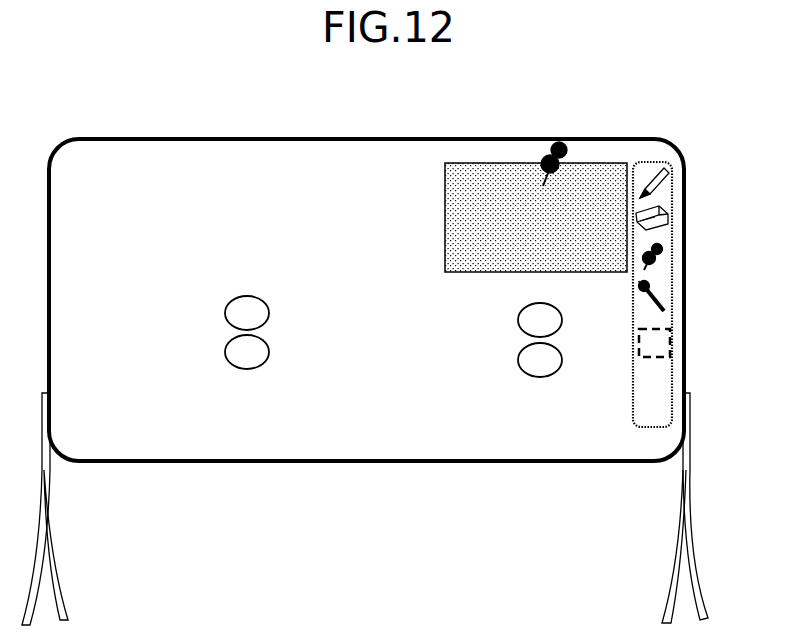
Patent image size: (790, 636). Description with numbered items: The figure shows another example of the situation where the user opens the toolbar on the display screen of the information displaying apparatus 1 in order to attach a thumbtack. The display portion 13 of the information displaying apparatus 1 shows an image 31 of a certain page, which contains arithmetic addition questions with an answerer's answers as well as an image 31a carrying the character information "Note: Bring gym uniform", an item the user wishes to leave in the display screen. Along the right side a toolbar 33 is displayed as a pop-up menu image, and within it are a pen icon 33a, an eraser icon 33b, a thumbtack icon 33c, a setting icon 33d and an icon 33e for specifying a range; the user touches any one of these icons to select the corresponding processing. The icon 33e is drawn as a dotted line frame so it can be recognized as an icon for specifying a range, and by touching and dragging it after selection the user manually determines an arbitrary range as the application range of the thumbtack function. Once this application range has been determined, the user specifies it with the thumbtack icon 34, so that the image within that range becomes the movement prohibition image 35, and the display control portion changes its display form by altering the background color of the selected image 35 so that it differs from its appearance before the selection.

The information displaying apparatus 1 is at (384, 354).
The display portion 13 is at (345, 137).
The image 31 is at (351, 442).
The image showing character information 31a is at (459, 243).
The toolbar 33 is at (689, 294).
The pen icon 33a is at (665, 182).
The eraser icon 33b is at (668, 218).
The thumbtack icon 33c is at (661, 258).
The setting icon 33d is at (661, 303).
The icon for specifying 33e is at (656, 345).
The thumbtack icon 34 is at (565, 142).
The movement prohibition image 35 is at (487, 183).